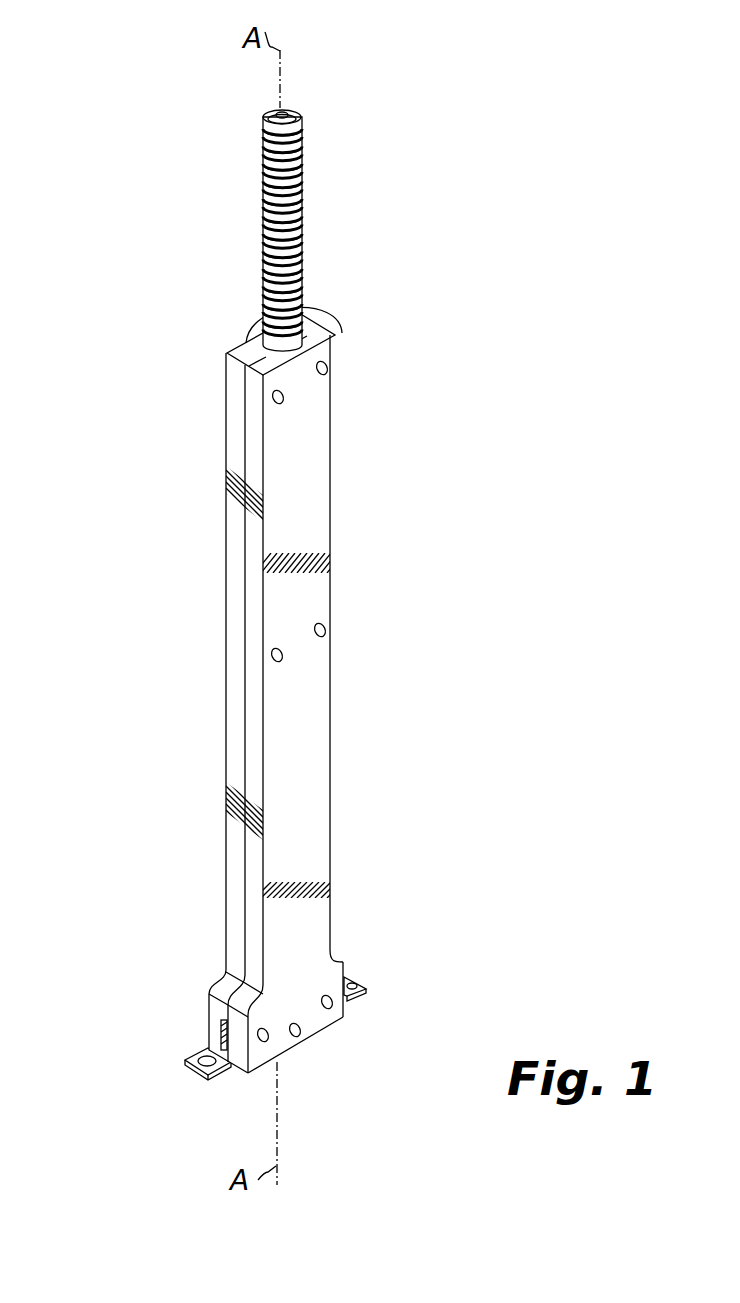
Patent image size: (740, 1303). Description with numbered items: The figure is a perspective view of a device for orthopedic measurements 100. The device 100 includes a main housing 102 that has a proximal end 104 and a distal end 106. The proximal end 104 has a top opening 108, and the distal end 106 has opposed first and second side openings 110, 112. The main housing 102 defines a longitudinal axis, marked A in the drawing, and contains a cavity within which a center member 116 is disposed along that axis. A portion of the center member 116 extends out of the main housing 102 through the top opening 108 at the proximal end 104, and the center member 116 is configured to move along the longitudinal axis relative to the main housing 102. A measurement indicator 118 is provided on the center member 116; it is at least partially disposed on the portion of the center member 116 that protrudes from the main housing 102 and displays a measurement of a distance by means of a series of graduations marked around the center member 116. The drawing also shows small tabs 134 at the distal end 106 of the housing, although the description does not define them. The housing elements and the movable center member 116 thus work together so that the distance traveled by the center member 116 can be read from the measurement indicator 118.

The device for orthopedic measurements 100 is at (100, 238).
The main housing 102 is at (331, 720).
The proximal end 104 is at (333, 333).
The distal end 106 is at (315, 1037).
The top opening 108 is at (260, 338).
The first side opening 110 is at (207, 1027).
The second side opening 112 is at (345, 977).
The center member 116 is at (298, 170).
The measurement indicator 118 is at (296, 232).
The mounting tab 134 is at (362, 990).